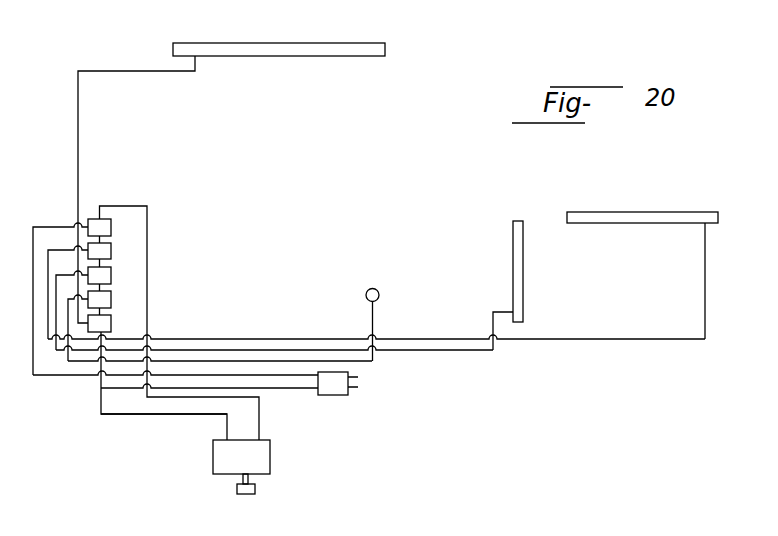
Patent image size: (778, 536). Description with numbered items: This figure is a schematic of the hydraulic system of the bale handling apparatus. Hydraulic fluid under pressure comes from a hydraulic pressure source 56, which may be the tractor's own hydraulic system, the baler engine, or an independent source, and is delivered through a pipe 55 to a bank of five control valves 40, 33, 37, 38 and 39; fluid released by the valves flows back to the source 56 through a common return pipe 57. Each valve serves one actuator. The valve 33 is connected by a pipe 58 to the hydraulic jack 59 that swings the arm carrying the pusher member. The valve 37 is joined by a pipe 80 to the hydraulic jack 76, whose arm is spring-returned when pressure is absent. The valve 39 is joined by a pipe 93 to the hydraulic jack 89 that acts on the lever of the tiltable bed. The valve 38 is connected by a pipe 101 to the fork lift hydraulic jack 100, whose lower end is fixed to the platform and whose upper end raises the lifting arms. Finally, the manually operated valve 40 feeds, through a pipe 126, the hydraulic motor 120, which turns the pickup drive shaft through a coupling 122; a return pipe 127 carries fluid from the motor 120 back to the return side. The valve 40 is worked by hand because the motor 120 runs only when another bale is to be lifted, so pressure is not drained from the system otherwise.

The valve 33 is at (116, 254).
The valve 37 is at (116, 278).
The valve 38 is at (116, 302).
The valve 39 is at (116, 326).
The valve 40 is at (116, 230).
The pipe 55 is at (148, 280).
The hydraulic pressure source 56 is at (284, 459).
The common return pipe 57 is at (155, 417).
The pipe 58 is at (48, 297).
The hydraulic jack 59 is at (643, 223).
The hydraulic jack 76 is at (518, 277).
The pipe 80 is at (450, 351).
The hydraulic jack 89 is at (275, 56).
The pipe 93 is at (78, 167).
The hydraulic jack 100 is at (379, 294).
The pipe 101 is at (374, 328).
The hydraulic motor 120 is at (335, 395).
The coupling 122 is at (255, 489).
The pipe 126 is at (247, 375).
The return pipe 127 is at (284, 389).